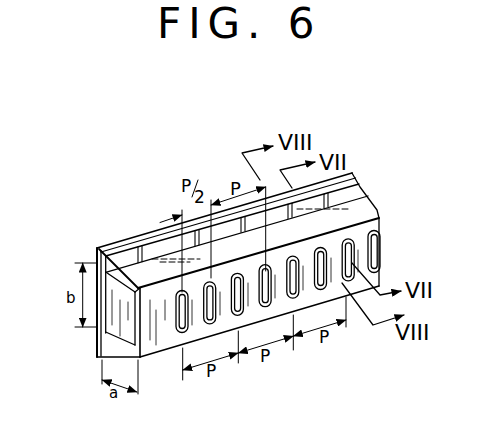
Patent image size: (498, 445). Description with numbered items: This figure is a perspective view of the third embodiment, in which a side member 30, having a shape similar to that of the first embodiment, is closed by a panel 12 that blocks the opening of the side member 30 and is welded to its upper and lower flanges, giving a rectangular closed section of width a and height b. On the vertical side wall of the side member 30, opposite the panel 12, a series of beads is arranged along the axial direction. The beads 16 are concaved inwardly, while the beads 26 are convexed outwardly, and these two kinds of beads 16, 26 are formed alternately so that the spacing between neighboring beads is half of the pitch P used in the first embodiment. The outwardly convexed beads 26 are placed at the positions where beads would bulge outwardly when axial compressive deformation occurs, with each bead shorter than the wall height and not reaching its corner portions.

The panel 12 is at (95, 258).
The beads 16 is at (178, 329).
The beads 26 is at (323, 250).
The side member 30 is at (372, 193).